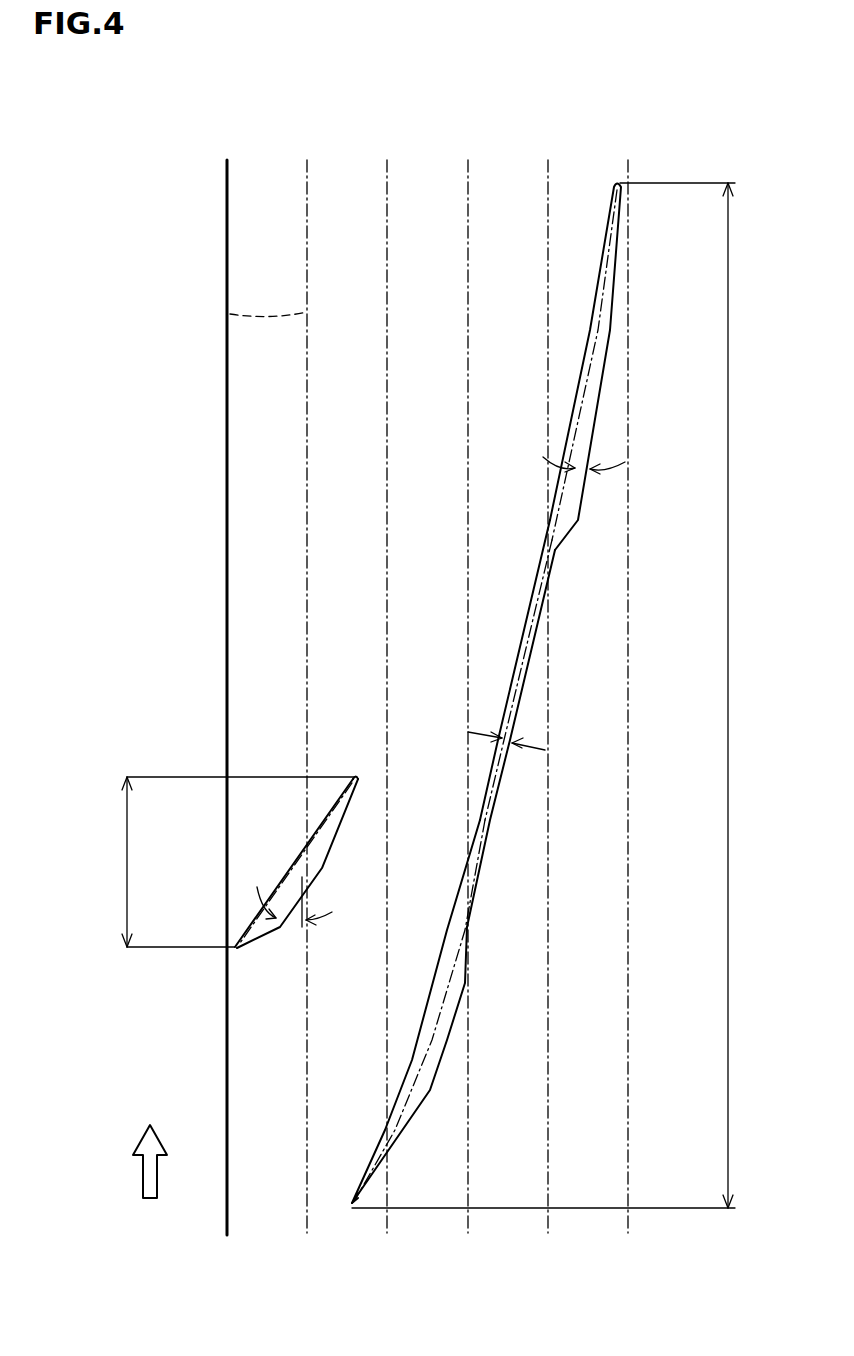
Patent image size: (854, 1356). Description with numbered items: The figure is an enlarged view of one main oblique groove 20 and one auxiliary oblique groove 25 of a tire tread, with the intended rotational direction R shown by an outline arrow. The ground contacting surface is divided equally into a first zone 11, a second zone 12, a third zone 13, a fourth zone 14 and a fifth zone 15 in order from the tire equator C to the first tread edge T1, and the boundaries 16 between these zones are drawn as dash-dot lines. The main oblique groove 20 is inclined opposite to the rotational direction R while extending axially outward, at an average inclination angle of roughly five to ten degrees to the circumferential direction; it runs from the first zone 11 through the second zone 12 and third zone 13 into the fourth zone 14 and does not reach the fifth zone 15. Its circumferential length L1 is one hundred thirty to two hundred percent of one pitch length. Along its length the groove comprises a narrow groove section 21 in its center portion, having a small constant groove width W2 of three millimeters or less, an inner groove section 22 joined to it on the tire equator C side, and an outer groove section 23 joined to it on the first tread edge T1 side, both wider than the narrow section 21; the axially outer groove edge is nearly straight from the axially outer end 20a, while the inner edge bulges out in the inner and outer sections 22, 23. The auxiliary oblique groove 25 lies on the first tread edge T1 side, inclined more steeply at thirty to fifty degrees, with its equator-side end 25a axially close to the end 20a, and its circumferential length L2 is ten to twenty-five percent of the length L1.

The first zone 11 is at (585, 197).
The second zone 12 is at (505, 197).
The third zone 13 is at (425, 197).
The fourth zone 14 is at (345, 197).
The fifth zone 15 is at (265, 197).
The boundaries of zones 16 is at (230, 314).
The tire equator C is at (627, 675).
The first tread edge T1 is at (227, 208).
The main oblique groove 20 is at (511, 747).
The axially outer end of main oblique groove 20a is at (352, 1208).
The narrow groove section 21 is at (497, 802).
The inner groove section 22 is at (600, 360).
The outer groove section 23 is at (450, 1008).
The auxiliary oblique groove 25 is at (247, 828).
The end of auxiliary oblique groove on tire equator side 25a is at (353, 773).
The constant groove width of narrow groove section W2 is at (510, 750).
The length of main oblique groove in tire circumferential direction L1 is at (557, 695).
The length of auxiliary oblique groove in tire circumferential direction L2 is at (221, 862).
The intended rotational direction R is at (150, 1149).